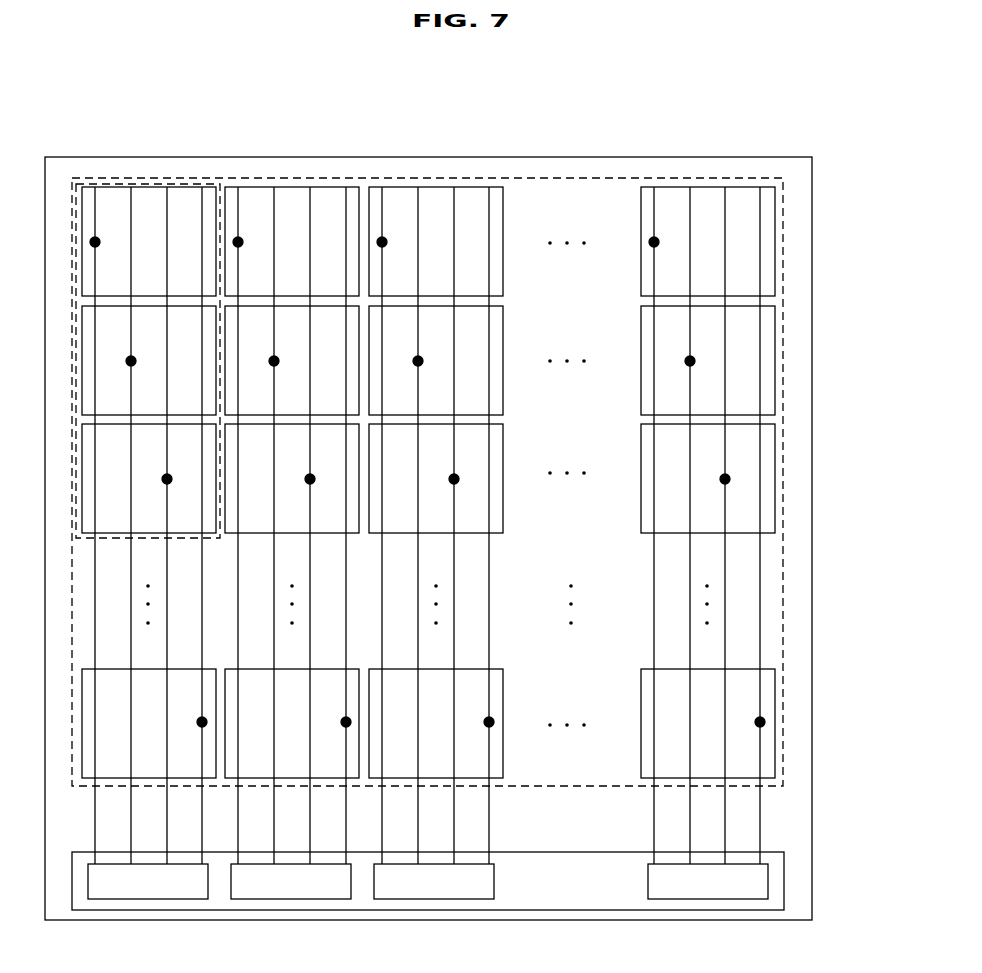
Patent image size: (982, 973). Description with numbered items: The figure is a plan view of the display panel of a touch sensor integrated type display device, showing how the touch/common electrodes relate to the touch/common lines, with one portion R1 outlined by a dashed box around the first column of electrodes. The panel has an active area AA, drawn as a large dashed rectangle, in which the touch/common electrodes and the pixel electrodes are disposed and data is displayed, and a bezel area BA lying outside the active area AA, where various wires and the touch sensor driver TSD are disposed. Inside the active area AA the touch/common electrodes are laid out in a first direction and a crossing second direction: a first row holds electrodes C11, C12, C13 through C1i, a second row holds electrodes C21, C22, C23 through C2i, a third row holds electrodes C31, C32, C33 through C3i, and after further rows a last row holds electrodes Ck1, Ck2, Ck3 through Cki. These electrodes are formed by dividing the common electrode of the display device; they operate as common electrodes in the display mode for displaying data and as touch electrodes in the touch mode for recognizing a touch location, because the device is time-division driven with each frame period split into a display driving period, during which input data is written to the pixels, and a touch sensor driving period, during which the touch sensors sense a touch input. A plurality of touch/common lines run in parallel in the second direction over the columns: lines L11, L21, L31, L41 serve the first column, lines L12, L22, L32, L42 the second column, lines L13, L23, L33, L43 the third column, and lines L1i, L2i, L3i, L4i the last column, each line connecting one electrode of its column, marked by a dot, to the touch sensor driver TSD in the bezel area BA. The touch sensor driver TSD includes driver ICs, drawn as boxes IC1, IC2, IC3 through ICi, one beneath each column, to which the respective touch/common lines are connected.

The bezel area BA is at (812, 240).
The active area AA is at (783, 412).
The portion R1 is at (147, 184).
The touch sensor driver TSD is at (784, 878).
The touch/common line L11 is at (79, 525).
The touch/common line L21 is at (115, 525).
The touch/common line L31 is at (151, 525).
The touch/common line L41 is at (186, 525).
The touch/common line L12 is at (222, 525).
The touch/common line L22 is at (258, 525).
The touch/common line L32 is at (294, 525).
The touch/common line L42 is at (330, 525).
The touch/common line L13 is at (366, 525).
The touch/common line L23 is at (402, 525).
The touch/common line L33 is at (438, 525).
The touch/common line L43 is at (473, 525).
The touch/common line L1i is at (638, 525).
The touch/common line L2i is at (674, 525).
The touch/common line L3i is at (709, 525).
The touch/common line L4i is at (744, 525).
The touch/common electrode C11 is at (149, 241).
The touch/common electrode C12 is at (292, 241).
The touch/common electrode C13 is at (436, 241).
The touch/common electrode C1i is at (708, 241).
The touch/common electrode C21 is at (149, 360).
The touch/common electrode C22 is at (292, 360).
The touch/common electrode C23 is at (436, 360).
The touch/common electrode C2i is at (708, 360).
The touch/common electrode C31 is at (149, 478).
The touch/common electrode C32 is at (292, 478).
The touch/common electrode C33 is at (436, 478).
The touch/common electrode C3i is at (708, 478).
The touch/common electrode Ck1 is at (149, 723).
The touch/common electrode Ck2 is at (292, 723).
The touch/common electrode Ck3 is at (436, 723).
The touch/common electrode Cki is at (708, 723).
The driver IC IC1 is at (148, 881).
The driver IC IC2 is at (291, 881).
The driver IC IC3 is at (434, 881).
The driver IC ICi is at (708, 881).